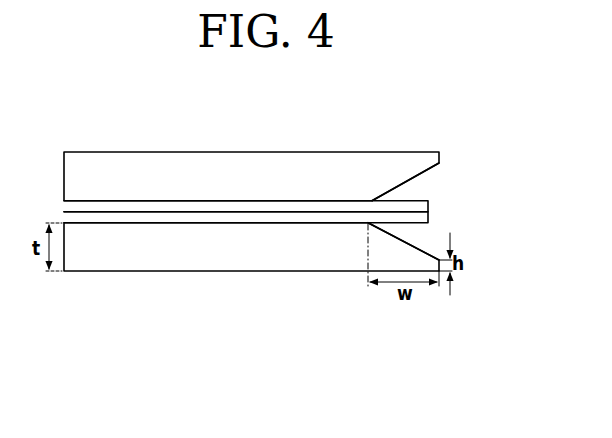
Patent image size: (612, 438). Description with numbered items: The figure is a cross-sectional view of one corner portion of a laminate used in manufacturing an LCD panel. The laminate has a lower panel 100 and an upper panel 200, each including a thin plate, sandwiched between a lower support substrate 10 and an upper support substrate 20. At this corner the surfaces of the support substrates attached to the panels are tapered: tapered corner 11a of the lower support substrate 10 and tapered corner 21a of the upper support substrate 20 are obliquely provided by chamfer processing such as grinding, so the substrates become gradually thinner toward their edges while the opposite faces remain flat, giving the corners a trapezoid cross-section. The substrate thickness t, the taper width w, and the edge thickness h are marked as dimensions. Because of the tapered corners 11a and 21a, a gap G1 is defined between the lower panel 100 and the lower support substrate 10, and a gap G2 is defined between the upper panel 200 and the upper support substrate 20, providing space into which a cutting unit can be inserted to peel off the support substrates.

The lower support substrate 10 is at (272, 250).
The tapered corner 11a is at (408, 257).
The upper support substrate 20 is at (272, 172).
The tapered corner 21a is at (416, 163).
The lower panel 100 is at (182, 216).
The upper panel 200 is at (182, 206).
The gap G1 is at (426, 237).
The gap G2 is at (425, 188).